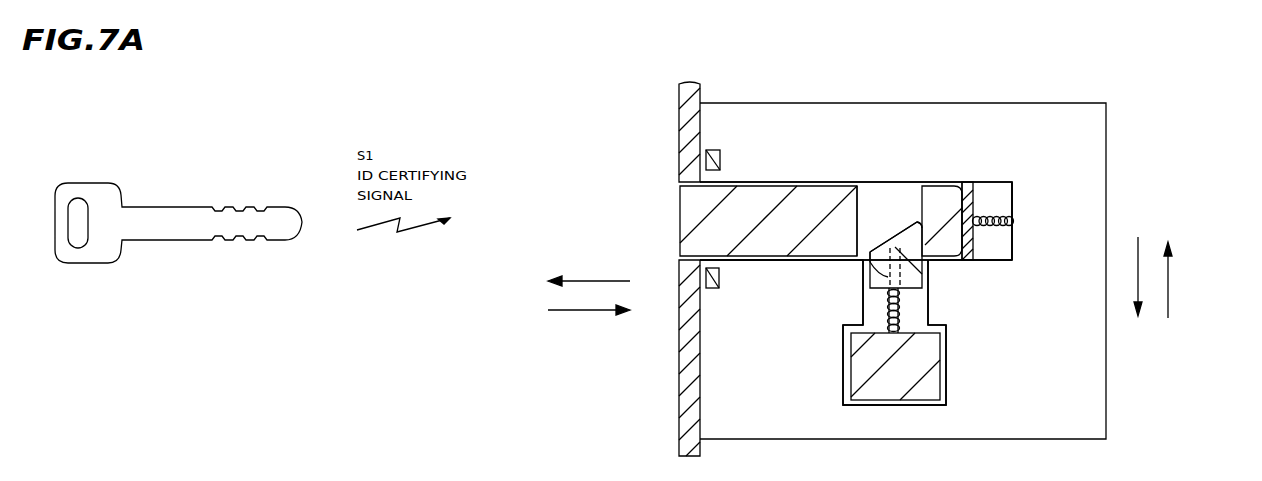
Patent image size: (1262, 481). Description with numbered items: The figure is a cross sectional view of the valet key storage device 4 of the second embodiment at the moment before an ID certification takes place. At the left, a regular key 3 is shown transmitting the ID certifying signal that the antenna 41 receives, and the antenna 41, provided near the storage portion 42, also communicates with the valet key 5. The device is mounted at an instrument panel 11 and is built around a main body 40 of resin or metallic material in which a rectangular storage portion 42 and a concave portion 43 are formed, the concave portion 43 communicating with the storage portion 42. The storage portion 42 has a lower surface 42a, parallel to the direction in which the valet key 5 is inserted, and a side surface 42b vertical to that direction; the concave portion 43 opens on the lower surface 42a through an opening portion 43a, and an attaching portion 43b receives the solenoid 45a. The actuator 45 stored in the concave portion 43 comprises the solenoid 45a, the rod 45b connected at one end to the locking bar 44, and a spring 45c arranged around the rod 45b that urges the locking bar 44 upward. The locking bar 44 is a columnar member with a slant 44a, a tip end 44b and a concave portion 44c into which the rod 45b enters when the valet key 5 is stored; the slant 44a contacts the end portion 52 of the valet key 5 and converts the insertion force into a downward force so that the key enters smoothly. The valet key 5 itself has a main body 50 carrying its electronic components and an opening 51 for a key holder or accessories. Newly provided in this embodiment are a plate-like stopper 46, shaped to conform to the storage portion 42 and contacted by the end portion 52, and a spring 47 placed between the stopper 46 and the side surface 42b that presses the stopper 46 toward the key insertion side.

The regular key 3 is at (78, 192).
The valet key storage device 4 is at (1090, 60).
The valet key 5 is at (656, 220).
The instrument panel 11 is at (679, 96).
The main body 40 is at (1106, 150).
The antenna 41 is at (713, 150).
The storage portion 42 is at (748, 181).
The lower surface 42a is at (995, 261).
The side surface 42b is at (1013, 187).
The concave portion 43 is at (955, 328).
The opening portion 43a is at (928, 292).
The attaching portion 43b is at (946, 370).
The locking bar 44 is at (870, 280).
The slant 44a is at (890, 236).
The tip end 44b is at (926, 215).
The concave portion 44c is at (888, 262).
The actuator 45 is at (888, 405).
The solenoid 45a is at (905, 392).
The rod 45b is at (905, 315).
The spring 45c is at (890, 333).
The stopper 46 is at (969, 186).
The spring 47 is at (1012, 220).
The main body 50 is at (680, 246).
The opening 51 is at (860, 200).
The end portion 52 is at (965, 181).